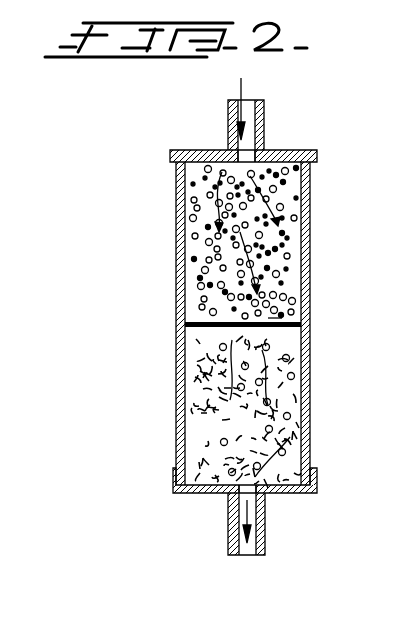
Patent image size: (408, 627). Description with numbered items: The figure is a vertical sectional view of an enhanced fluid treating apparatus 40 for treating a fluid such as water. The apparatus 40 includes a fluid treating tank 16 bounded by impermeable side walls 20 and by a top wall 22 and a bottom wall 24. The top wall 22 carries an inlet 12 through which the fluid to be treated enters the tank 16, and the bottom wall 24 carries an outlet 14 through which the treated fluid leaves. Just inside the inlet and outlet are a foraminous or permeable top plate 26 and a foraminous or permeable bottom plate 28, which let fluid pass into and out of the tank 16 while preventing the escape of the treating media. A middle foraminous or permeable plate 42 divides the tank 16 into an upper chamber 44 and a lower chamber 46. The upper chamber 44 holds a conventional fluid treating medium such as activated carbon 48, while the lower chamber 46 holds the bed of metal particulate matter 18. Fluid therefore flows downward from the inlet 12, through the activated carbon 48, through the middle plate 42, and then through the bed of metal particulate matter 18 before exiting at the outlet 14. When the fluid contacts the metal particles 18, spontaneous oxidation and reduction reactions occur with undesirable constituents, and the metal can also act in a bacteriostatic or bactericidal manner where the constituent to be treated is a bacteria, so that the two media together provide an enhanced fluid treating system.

The inlet 12 is at (264, 123).
The outlet 14 is at (266, 541).
The treating tank 16 is at (305, 416).
The bed of metal particulate matter 18 is at (275, 437).
The impermeable side walls 20 is at (305, 328).
The top wall 22 is at (290, 153).
The bottom wall 24 is at (210, 494).
The foraminous top plate 26 is at (230, 152).
The foraminous bottom plate 28 is at (266, 508).
The apparatus 40 is at (134, 273).
The middle foraminous plate 42 is at (268, 318).
The upper chamber 44 is at (176, 220).
The lower chamber 46 is at (177, 409).
The activated carbon 48 is at (300, 223).